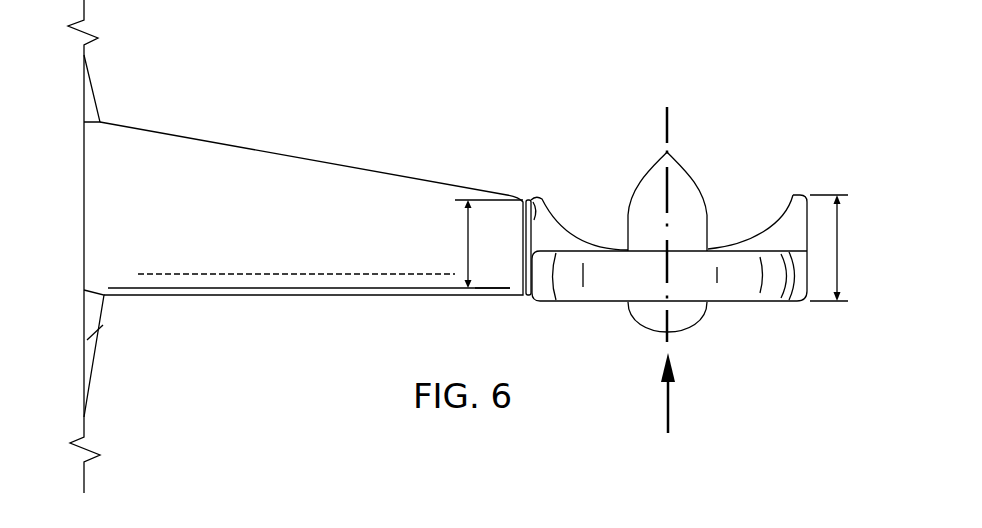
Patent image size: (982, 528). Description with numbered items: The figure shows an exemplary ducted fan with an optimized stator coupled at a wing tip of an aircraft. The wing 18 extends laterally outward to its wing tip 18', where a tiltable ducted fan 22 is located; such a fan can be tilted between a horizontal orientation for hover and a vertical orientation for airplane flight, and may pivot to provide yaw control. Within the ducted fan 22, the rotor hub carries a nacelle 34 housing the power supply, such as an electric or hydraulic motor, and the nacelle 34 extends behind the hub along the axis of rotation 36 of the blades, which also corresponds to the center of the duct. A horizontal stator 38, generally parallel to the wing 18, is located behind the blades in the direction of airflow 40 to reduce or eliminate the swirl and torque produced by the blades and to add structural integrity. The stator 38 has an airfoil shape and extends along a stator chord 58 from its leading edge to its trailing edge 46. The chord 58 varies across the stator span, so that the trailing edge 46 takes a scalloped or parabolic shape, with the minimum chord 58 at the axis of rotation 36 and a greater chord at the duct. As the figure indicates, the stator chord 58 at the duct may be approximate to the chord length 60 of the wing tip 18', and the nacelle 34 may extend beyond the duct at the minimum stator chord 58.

The wing 18 is at (295, 246).
The wing tip 18' is at (527, 216).
The tiltable ducted fan 22 is at (766, 116).
The nacelle 34 is at (637, 180).
The axis of rotation 36 is at (669, 125).
The horizontal stator 38 is at (572, 225).
The direction of airflow 40 is at (670, 403).
The trailing edge 46 is at (762, 228).
The stator chord length 58 is at (842, 248).
The chord length of wing tip 60 is at (462, 246).